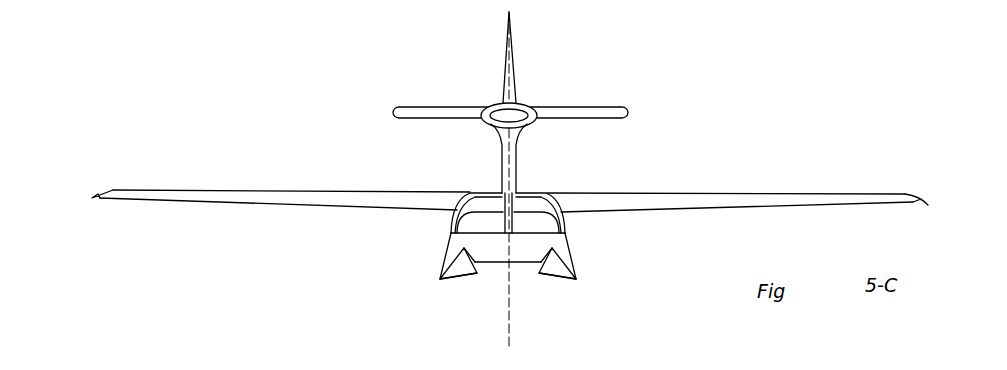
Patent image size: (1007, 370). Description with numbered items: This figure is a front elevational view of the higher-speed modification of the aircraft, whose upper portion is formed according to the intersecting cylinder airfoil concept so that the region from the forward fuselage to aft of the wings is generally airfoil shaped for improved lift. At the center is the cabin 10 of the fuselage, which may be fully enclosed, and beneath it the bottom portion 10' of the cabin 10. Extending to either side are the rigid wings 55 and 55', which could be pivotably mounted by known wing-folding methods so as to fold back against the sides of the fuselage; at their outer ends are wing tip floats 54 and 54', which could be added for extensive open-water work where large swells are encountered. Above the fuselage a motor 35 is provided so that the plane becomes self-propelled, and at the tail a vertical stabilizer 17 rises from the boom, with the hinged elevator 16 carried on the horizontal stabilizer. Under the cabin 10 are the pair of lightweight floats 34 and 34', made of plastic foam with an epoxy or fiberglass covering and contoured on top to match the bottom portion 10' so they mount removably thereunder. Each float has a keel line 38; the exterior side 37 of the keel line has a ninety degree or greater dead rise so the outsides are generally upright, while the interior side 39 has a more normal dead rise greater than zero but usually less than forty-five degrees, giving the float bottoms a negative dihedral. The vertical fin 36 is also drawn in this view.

The cabin 10 is at (493, 186).
The bottom portion of the cabin 10' is at (513, 302).
The elevator 16 is at (590, 106).
The vertical stabilizer 17 is at (513, 68).
The float 34 is at (605, 251).
The float 34' is at (402, 256).
The motor 35 is at (495, 104).
The vertical fin 36 is at (517, 168).
The exterior side of the keel line 37 is at (440, 268).
The keel line 38 is at (439, 281).
The interior side of the keel line 39 is at (457, 278).
The wing tip float 54 is at (944, 176).
The wing tip float 54' is at (111, 160).
The rigid wing 55 is at (730, 172).
The rigid wing 55' is at (285, 174).